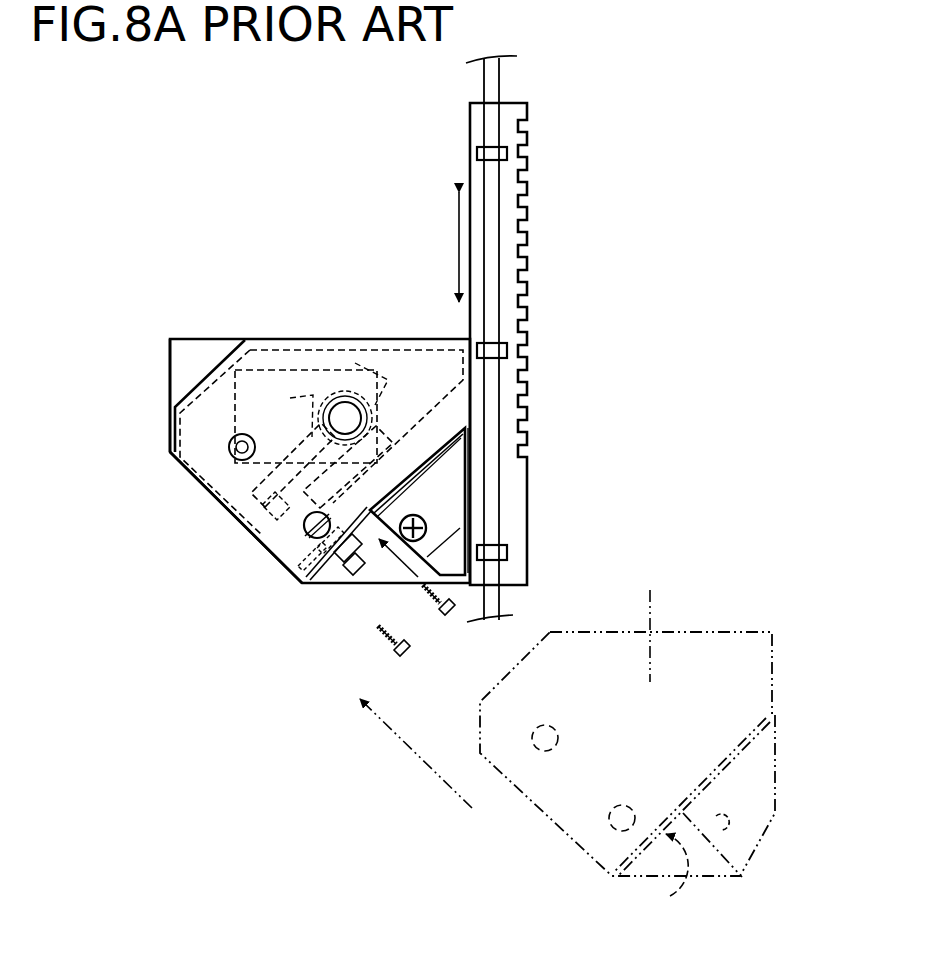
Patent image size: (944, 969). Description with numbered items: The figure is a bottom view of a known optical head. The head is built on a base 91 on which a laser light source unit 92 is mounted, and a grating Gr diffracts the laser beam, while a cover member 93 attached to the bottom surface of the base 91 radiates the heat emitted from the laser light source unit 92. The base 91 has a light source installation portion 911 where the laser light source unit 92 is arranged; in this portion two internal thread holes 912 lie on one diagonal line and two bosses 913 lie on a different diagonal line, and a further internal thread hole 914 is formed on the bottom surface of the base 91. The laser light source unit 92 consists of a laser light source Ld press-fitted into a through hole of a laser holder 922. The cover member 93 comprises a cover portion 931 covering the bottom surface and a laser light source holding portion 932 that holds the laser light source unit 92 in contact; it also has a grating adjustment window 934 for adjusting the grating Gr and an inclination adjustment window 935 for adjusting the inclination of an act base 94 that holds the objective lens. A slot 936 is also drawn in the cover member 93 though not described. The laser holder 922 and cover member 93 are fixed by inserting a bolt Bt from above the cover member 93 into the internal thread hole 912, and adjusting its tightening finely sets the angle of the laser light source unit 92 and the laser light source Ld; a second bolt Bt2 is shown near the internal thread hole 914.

The base 91 is at (428, 340).
The laser light source unit 92 is at (385, 502).
The laser holder 922 is at (417, 480).
The internal thread hole 914 is at (427, 529).
The cover member 93 is at (193, 388).
The cover portion 931 is at (180, 420).
The laser light source holding portion 932 is at (336, 568).
The grating adjustment window 934 is at (303, 538).
The inclination adjustment window 935 is at (227, 453).
The slot 936 is at (745, 830).
The act base 94 is at (235, 368).
The light source installation portion 911 is at (313, 598).
The internal thread holes 912 is at (312, 548).
The bosses 913 is at (333, 567).
The grating Gr is at (303, 530).
The laser light source Ld is at (352, 600).
The bolt Bt is at (445, 615).
The bolt Bt2 is at (423, 537).